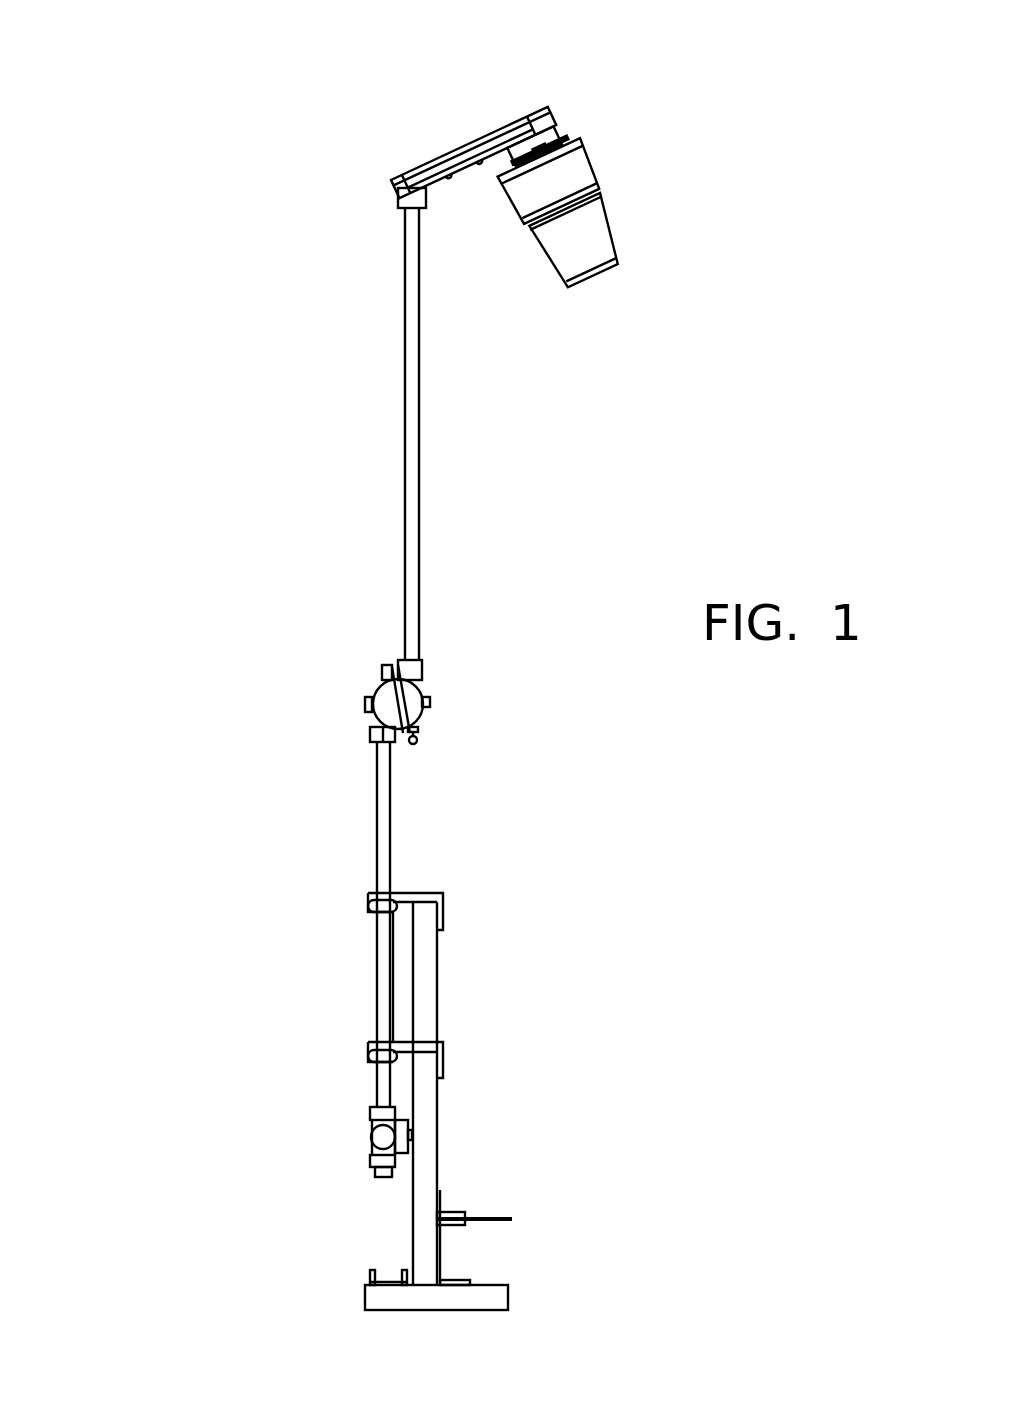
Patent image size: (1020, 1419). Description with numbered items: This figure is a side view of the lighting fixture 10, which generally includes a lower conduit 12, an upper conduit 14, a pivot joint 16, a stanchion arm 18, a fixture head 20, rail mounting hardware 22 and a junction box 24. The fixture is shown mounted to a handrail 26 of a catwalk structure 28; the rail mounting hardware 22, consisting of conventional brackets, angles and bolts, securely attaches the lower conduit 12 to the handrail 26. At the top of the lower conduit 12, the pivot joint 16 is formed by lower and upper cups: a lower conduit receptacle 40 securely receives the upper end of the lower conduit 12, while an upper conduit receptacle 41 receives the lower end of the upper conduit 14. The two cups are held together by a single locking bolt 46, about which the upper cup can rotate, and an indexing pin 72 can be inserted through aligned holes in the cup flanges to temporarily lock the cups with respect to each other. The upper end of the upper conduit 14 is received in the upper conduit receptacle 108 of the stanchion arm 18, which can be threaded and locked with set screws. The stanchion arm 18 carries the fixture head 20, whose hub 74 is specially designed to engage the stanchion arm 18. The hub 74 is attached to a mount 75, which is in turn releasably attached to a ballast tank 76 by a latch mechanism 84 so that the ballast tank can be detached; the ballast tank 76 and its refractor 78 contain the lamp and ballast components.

The lighting fixture 10 is at (208, 320).
The lower conduit 12 is at (378, 868).
The upper conduit 14 is at (405, 367).
The pivot joint 16 is at (370, 705).
The stanchion arm 18 is at (548, 103).
The fixture head 20 is at (558, 275).
The rail mounting hardware 22 is at (405, 905).
The junction box 24 is at (370, 1120).
The handrail 26 is at (437, 1106).
The catwalk structure 28 is at (368, 1305).
The lower conduit receptacle 40 is at (372, 738).
The upper conduit receptacle 41 is at (425, 668).
The locking bolt 46 is at (432, 702).
The indexing pin 72 is at (420, 738).
The hub 74 is at (557, 138).
The mount 75 is at (590, 145).
The ballast tank 76 is at (602, 175).
The refractor 78 is at (602, 198).
The latch mechanism 84 is at (553, 172).
The upper conduit receptacle 108 is at (400, 207).